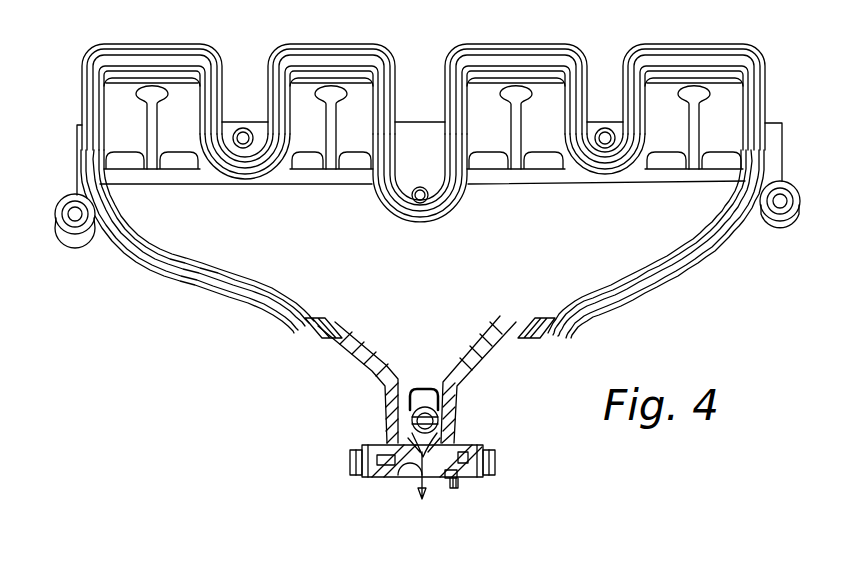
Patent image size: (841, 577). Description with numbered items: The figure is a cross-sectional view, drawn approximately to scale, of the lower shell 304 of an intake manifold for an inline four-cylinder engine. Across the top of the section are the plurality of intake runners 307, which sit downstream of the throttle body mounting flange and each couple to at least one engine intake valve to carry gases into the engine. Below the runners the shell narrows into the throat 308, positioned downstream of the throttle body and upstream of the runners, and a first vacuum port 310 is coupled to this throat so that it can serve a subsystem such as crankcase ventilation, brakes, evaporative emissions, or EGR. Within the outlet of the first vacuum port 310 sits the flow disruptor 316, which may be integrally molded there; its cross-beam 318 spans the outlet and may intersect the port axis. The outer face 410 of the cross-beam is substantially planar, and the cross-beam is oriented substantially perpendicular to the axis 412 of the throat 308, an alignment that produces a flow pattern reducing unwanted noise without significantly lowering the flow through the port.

The lower shell 304 is at (416, 241).
The intake runners 307 is at (127, 85).
The throat 308 is at (444, 483).
The first vacuum port 310 is at (433, 443).
The flow disruptor 316 is at (424, 389).
The cross-beam 318 is at (440, 421).
The outer face 410 is at (410, 443).
The axis 412 is at (396, 468).